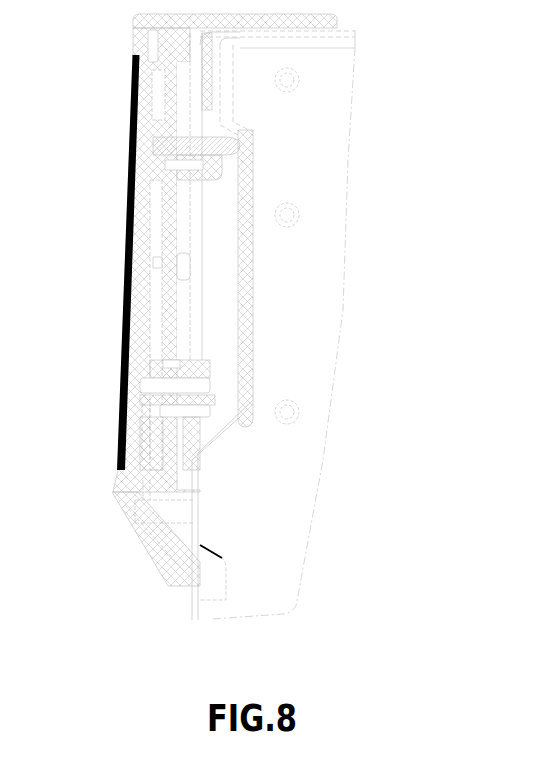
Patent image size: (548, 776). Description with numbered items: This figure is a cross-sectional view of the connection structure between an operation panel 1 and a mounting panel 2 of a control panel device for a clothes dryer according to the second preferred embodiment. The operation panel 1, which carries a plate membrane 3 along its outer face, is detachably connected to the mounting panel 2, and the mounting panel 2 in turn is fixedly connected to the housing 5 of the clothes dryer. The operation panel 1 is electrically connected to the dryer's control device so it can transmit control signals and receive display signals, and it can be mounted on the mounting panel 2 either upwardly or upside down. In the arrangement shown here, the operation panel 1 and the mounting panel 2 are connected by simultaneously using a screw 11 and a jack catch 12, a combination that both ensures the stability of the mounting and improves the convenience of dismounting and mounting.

The operation panel 1 is at (127, 245).
The mounting panel 2 is at (150, 562).
The plate membrane 3 is at (131, 169).
The housing of a clothes dryer 5 is at (313, 313).
The screw 11 is at (240, 137).
The jack catch 12 is at (213, 393).